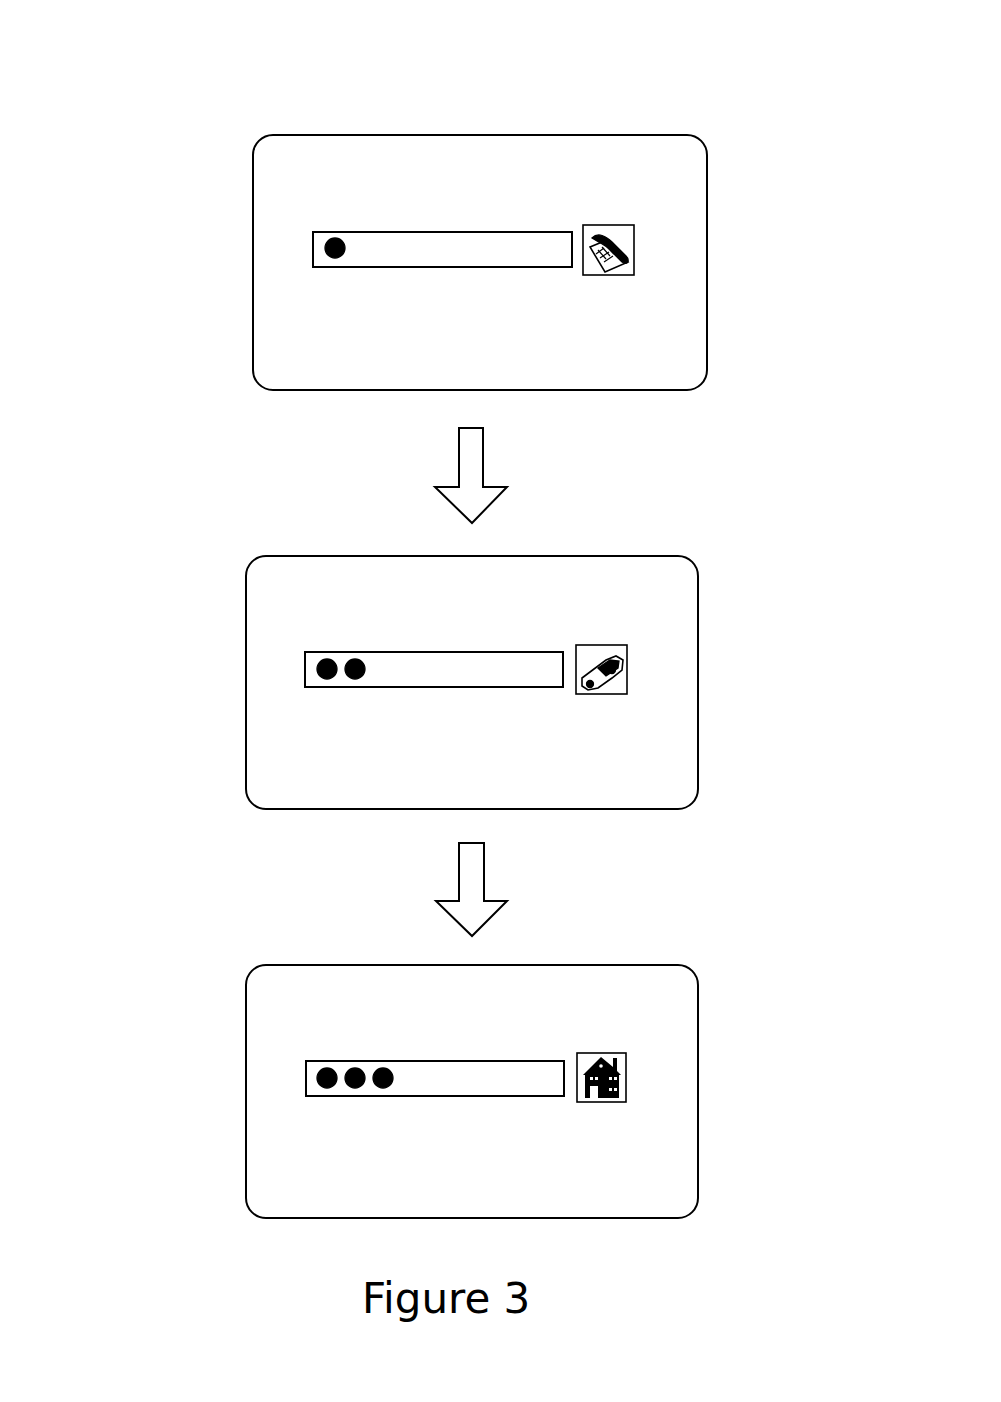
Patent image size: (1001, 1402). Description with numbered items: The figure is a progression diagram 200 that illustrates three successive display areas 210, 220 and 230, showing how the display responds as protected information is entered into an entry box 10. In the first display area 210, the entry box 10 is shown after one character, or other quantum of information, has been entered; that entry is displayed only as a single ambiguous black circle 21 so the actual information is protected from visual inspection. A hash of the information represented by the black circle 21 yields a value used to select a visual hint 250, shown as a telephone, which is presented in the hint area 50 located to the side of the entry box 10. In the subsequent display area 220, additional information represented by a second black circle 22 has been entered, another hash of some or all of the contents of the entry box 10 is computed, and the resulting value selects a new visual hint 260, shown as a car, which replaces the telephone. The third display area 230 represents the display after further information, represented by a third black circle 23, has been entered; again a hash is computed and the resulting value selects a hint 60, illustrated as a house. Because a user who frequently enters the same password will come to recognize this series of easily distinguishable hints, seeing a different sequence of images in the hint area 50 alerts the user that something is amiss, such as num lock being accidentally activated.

The progression diagram 200 is at (156, 67).
The display area 210 is at (253, 191).
The display area 220 is at (246, 610).
The display area 230 is at (246, 1019).
The entry box 10 is at (455, 231).
The black circle 21 is at (330, 258).
The black circle 22 is at (353, 680).
The black circle 23 is at (381, 1090).
The hint area 50 is at (593, 223).
The visual hint 250 is at (634, 253).
The visual hint 260 is at (626, 672).
The hint 60 is at (626, 1078).